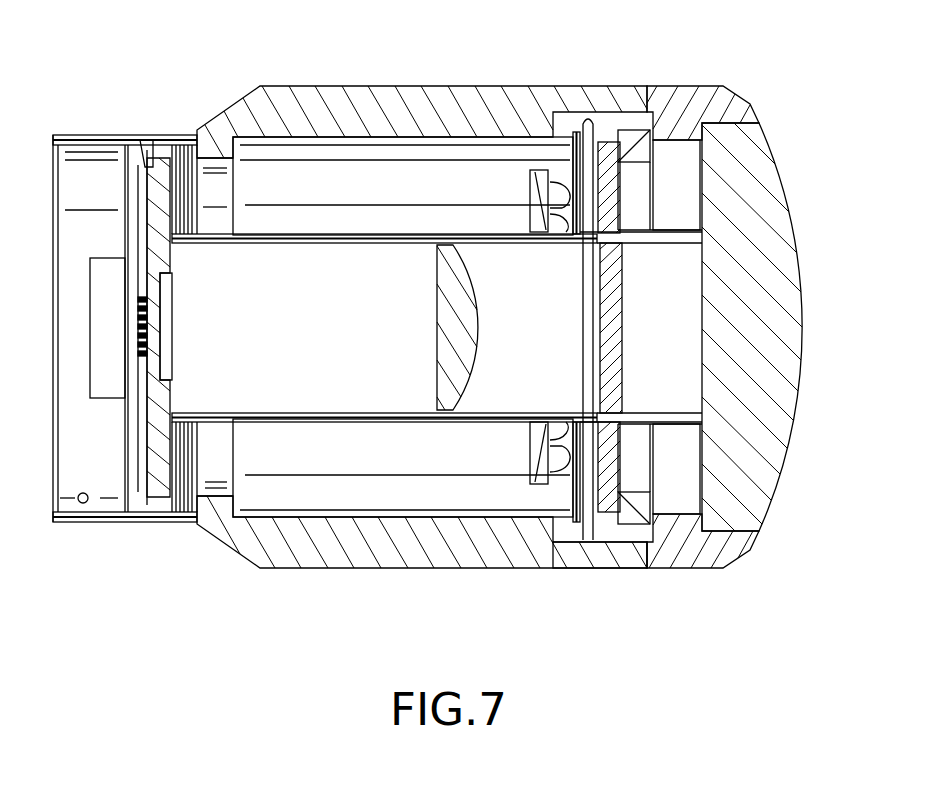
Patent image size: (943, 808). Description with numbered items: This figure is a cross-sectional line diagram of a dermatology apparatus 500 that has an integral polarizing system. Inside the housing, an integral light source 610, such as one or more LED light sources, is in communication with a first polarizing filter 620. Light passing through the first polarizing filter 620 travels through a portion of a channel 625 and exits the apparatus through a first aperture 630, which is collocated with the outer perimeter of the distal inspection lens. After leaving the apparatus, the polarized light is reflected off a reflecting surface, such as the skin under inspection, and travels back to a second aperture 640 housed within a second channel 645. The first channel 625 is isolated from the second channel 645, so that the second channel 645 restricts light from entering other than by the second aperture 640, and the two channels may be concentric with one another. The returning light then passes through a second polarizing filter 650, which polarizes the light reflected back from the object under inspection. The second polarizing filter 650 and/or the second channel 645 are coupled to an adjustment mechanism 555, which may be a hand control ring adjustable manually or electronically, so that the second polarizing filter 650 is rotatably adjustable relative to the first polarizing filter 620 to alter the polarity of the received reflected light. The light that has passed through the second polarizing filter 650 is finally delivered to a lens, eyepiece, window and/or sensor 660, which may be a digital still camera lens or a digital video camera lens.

The dermatology apparatus 500 is at (415, 112).
The adjustment mechanism 555 is at (593, 558).
The light source 610 is at (563, 198).
The first polarizing filter 620 is at (581, 165).
The channel 625 is at (667, 178).
The first aperture 630 is at (697, 183).
The second aperture 640 is at (672, 338).
The second channel 645 is at (667, 380).
The second polarizing filter 650 is at (624, 398).
The lens and/or sensor 660 is at (168, 338).